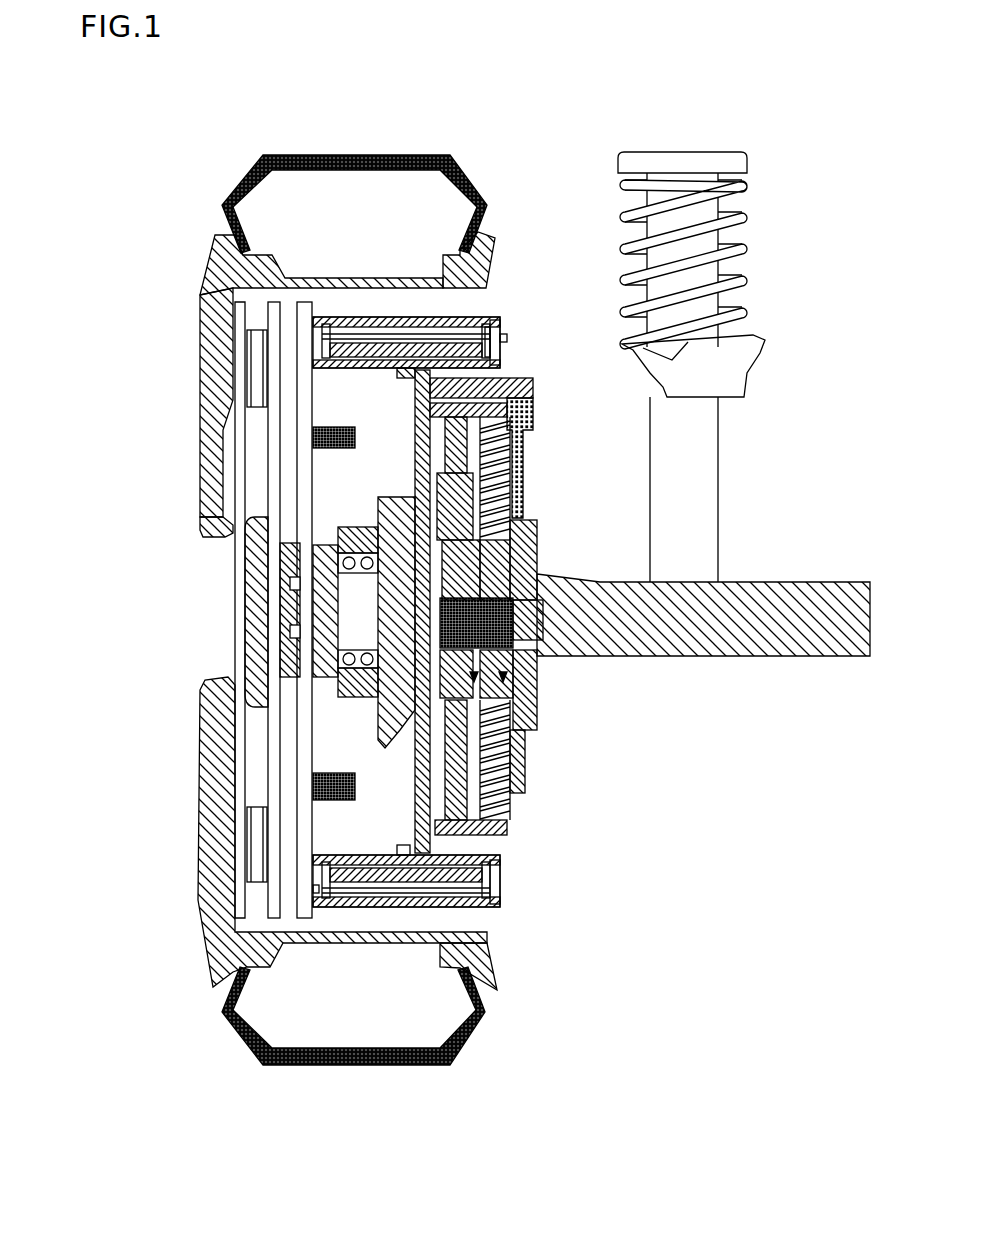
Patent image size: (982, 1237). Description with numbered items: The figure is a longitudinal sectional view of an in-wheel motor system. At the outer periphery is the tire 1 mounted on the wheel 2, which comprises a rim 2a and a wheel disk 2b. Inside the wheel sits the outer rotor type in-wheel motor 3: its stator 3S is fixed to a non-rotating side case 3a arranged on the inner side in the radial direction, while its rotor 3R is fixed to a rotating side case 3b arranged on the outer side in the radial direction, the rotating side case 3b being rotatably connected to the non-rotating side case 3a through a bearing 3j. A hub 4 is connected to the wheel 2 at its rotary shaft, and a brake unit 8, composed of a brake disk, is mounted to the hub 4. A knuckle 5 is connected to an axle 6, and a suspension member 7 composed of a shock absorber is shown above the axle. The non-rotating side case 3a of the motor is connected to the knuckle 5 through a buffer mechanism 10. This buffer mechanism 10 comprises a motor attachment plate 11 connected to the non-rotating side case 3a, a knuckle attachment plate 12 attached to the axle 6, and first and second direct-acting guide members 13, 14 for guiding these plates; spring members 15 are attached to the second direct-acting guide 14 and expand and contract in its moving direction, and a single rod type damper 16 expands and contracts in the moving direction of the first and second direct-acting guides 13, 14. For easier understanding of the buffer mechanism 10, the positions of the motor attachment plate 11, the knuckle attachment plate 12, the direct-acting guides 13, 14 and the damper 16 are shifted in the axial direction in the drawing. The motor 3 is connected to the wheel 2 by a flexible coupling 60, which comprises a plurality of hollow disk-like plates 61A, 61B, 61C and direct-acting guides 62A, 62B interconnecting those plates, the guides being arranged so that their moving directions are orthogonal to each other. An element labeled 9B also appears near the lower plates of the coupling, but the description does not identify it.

The tire 1 is at (422, 155).
The wheel 2 is at (290, 569).
The rim 2a is at (223, 235).
The wheel disk 2b is at (200, 522).
The outer rotor type in-wheel motor 3 is at (449, 556).
The stator 3S is at (357, 342).
The rotor 3R is at (410, 330).
The non-rotating side case 3a is at (493, 352).
The rotating side case 3b is at (500, 318).
The bearing 3j is at (507, 340).
The hub 4 is at (310, 595).
The knuckle 5 is at (397, 728).
The axle 6 is at (767, 590).
The suspension member 7 is at (712, 310).
The brake unit 8 is at (327, 783).
The lower plate 9B is at (238, 818).
The buffer mechanism 10 is at (617, 621).
The motor attachment plate 11 is at (415, 430).
The knuckle attachment plate 12 is at (415, 458).
The first direct-acting guide member 13 is at (475, 676).
The second direct-acting guide member 14 is at (505, 680).
The spring member 15 is at (513, 460).
The single rod type damper 16 is at (540, 553).
The flexible coupling 60 is at (174, 581).
The hollow disk-like plate 61A is at (295, 687).
The hollow disk-like plate 61B is at (258, 417).
The hollow disk-like plate 61C is at (227, 325).
The direct-acting guide 62A is at (287, 613).
The direct-acting guide 62B is at (238, 360).